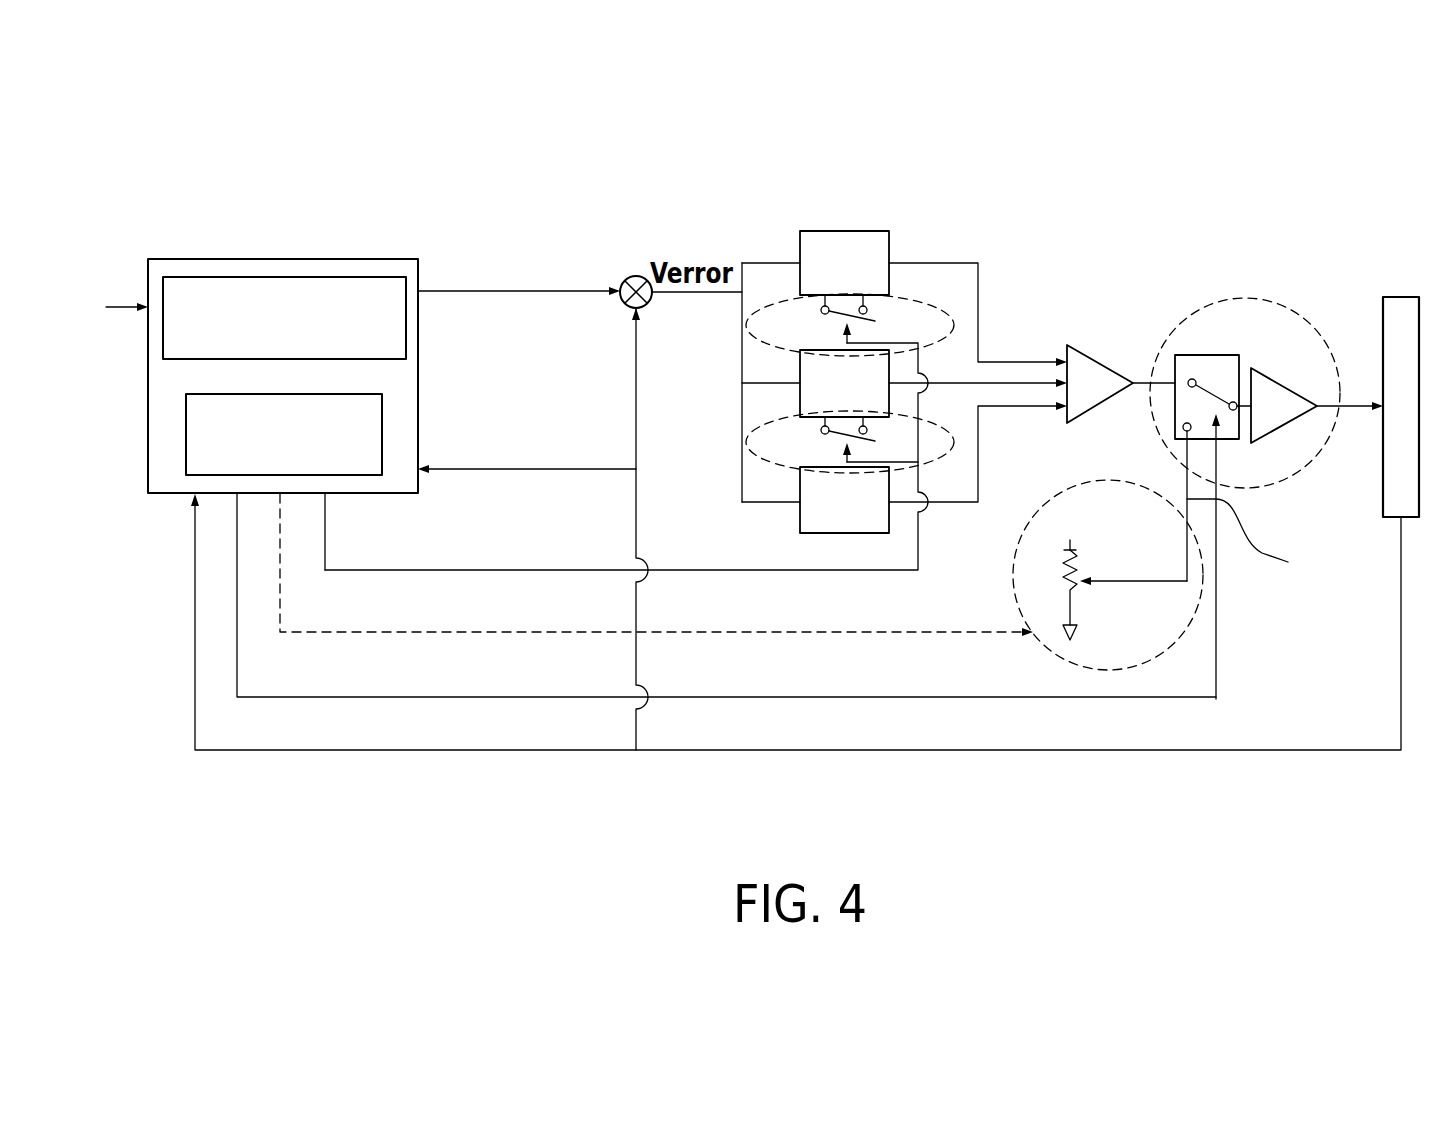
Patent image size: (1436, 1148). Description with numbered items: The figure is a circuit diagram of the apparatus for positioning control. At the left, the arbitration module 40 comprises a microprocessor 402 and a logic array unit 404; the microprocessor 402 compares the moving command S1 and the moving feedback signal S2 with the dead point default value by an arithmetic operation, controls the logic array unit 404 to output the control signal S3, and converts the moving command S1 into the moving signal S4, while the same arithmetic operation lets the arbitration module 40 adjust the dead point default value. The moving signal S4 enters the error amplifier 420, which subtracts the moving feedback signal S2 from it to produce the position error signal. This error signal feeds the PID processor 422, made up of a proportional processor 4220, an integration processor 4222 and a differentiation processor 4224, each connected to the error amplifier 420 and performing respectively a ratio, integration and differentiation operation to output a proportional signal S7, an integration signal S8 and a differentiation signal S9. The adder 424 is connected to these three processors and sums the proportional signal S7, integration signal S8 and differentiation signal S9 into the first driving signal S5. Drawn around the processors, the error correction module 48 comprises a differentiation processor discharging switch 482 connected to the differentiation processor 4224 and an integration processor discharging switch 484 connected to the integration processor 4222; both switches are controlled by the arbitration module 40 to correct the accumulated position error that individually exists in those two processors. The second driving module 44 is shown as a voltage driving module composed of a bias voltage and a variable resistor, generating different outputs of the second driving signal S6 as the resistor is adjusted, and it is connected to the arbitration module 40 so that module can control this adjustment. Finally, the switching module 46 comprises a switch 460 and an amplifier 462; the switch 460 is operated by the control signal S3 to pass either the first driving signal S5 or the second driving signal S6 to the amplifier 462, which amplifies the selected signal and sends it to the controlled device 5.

The arbitration module 40 is at (215, 259).
The microprocessor 402 is at (283, 277).
The logic array unit 404 is at (186, 432).
The error amplifier 420 is at (637, 276).
The PID processor 422 is at (553, 338).
The proportional processor 4220 is at (800, 523).
The integration processor 4222 is at (800, 403).
The differentiation processor 4224 is at (800, 283).
The adder 424 is at (1100, 363).
The second driving module 44 is at (1200, 650).
The switching module 46 is at (1258, 460).
The switch 460 is at (1225, 355).
The amplifier 462 is at (1283, 432).
The error correction module 48 is at (691, 329).
The differentiation processor discharging switch 482 is at (905, 299).
The integration processor discharging switch 484 is at (938, 425).
The controlled device 5 is at (1397, 297).
The moving command S1 is at (112, 307).
The moving feedback signal S2 is at (1015, 750).
The control signal S3 is at (472, 697).
The moving signal S4 is at (492, 291).
The first driving signal S5 is at (1142, 383).
The second driving signal S6 is at (1254, 540).
The proportional signal S7 is at (1025, 410).
The integration signal S8 is at (1035, 383).
The differentiation signal S9 is at (1003, 362).